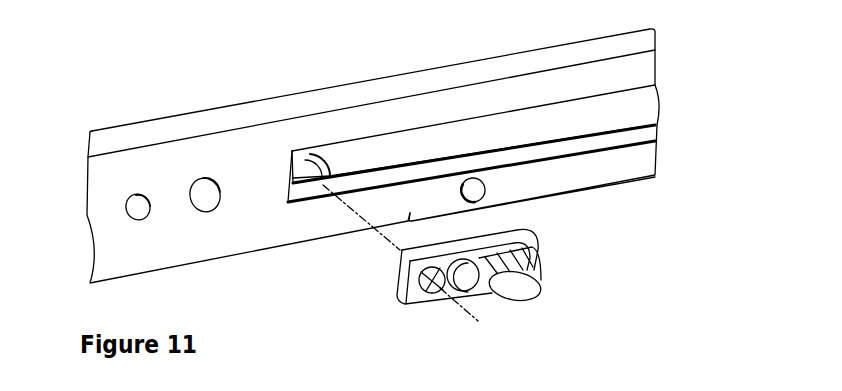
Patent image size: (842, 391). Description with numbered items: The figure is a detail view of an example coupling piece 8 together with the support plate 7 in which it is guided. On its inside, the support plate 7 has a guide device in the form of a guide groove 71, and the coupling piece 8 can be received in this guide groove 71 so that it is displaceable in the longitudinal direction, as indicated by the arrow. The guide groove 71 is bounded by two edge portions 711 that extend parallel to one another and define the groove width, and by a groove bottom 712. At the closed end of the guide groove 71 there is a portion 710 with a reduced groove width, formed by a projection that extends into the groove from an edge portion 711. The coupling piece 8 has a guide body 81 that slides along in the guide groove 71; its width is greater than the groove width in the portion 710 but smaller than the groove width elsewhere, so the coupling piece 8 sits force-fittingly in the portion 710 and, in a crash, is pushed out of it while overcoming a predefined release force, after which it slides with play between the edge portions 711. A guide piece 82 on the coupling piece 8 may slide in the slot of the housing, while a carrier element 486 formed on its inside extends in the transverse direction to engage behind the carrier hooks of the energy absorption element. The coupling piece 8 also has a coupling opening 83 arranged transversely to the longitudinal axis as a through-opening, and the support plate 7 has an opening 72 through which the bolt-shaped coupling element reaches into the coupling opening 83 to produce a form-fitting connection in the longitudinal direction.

The support plate 7 is at (220, 120).
The guide groove 71 is at (543, 123).
The edge portions 711 is at (473, 125).
The groove bottom 712 is at (408, 155).
The opening 72 is at (308, 147).
The portion with a reduced groove width 710 is at (302, 212).
The coupling piece 8 is at (476, 285).
The guide body 81 is at (405, 282).
The guide piece 82 is at (470, 286).
The coupling opening 83 is at (428, 293).
The carrier element 486 is at (542, 295).